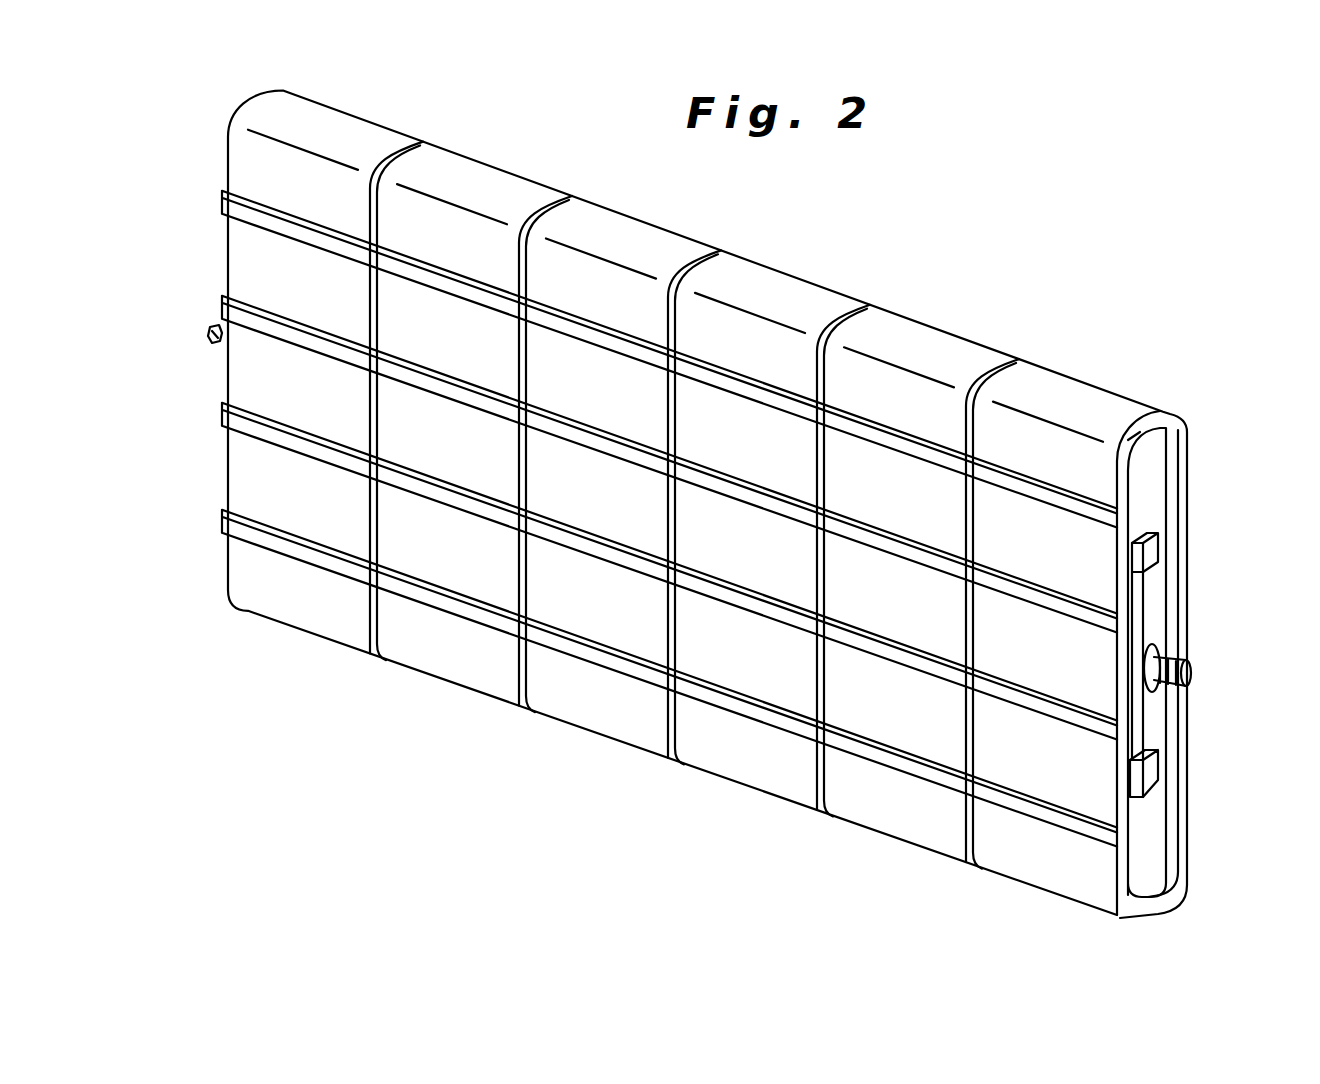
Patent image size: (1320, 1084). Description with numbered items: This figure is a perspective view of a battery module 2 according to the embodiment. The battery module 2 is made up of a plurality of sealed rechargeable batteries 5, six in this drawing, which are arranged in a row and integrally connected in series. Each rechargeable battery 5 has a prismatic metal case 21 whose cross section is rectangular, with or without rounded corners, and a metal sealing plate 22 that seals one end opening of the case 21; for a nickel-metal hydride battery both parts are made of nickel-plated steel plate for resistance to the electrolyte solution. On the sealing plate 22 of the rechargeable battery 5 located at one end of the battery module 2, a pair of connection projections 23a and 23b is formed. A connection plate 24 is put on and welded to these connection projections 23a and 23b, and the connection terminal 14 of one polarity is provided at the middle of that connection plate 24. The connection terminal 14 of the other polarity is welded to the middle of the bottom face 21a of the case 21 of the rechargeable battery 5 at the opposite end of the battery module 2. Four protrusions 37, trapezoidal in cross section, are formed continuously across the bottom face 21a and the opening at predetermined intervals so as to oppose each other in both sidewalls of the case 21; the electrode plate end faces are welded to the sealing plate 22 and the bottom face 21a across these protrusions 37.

The battery module 2 is at (894, 232).
The sealed rechargeable battery 5 is at (374, 114).
The connection terminal 14 is at (208, 338).
The metal case 21 is at (313, 607).
The bottom face 21a is at (227, 465).
The sealing plate 22 is at (1143, 842).
The connection projection 23a is at (1150, 533).
The connection projection 23b is at (1145, 773).
The connection plate 24 is at (1157, 587).
The protrusion 37 is at (283, 222).